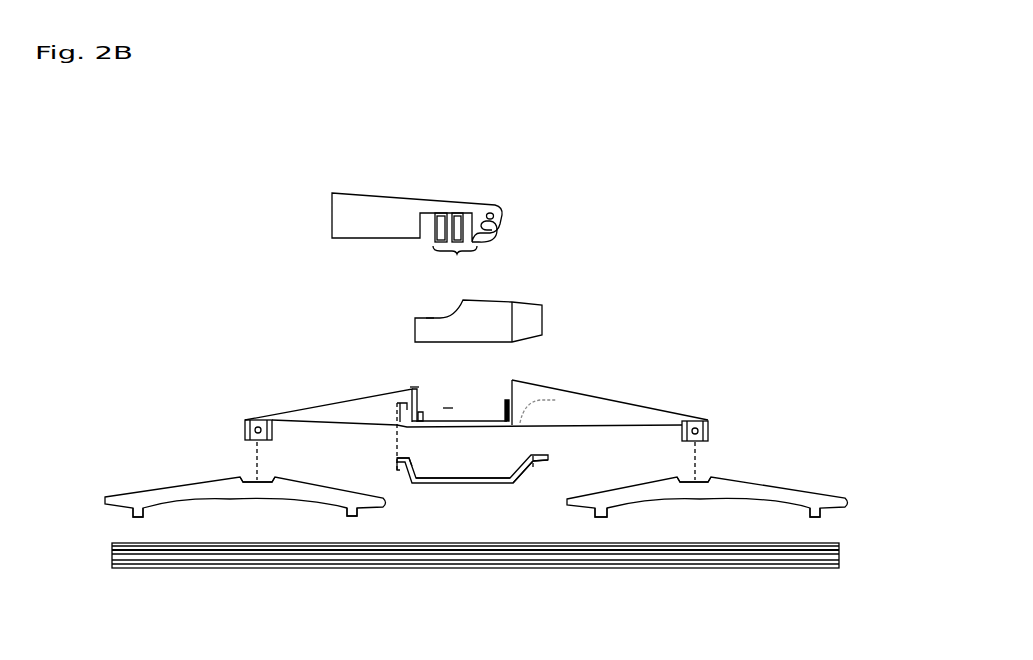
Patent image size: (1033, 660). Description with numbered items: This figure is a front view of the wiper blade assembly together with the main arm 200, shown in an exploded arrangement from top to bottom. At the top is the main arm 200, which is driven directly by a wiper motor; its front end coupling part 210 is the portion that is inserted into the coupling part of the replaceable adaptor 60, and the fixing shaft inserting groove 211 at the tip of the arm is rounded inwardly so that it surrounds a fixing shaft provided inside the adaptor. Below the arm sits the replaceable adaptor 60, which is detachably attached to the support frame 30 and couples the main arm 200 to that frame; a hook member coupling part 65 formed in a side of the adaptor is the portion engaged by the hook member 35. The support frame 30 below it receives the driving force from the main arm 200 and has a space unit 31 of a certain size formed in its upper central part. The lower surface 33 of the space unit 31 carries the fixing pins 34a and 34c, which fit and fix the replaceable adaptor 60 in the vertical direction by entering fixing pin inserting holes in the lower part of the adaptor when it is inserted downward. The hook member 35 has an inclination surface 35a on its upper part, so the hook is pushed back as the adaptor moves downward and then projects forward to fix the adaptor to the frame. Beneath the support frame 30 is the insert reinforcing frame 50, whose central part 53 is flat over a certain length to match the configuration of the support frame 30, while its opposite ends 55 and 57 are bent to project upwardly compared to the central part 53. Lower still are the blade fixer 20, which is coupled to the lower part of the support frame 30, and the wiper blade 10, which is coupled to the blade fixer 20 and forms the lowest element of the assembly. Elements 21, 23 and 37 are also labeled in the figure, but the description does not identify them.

The wiper blade 10 is at (97, 530).
The blade fixer 20 is at (153, 476).
The rail slot 21 is at (247, 477).
The rail foot 23 is at (143, 512).
The support frame 30 is at (280, 400).
The space unit 31 is at (448, 407).
The lower surface 33 is at (477, 418).
The fixing pin 34a is at (430, 416).
The fixing pin 34c is at (503, 398).
The hook member 35 is at (408, 385).
The inclination surface 35a is at (412, 386).
The connector housing 37 is at (273, 431).
The insert reinforcing frame 50 is at (571, 394).
The central part 53 is at (464, 484).
The opposite end 55 is at (541, 462).
The opposite end 57 is at (397, 460).
The replaceable adaptor 60 is at (533, 290).
The hook member coupling part 65 is at (430, 318).
The main arm 200 is at (403, 180).
The front end coupling part 210 is at (455, 243).
The fixing shaft inserting groove 211 is at (504, 213).